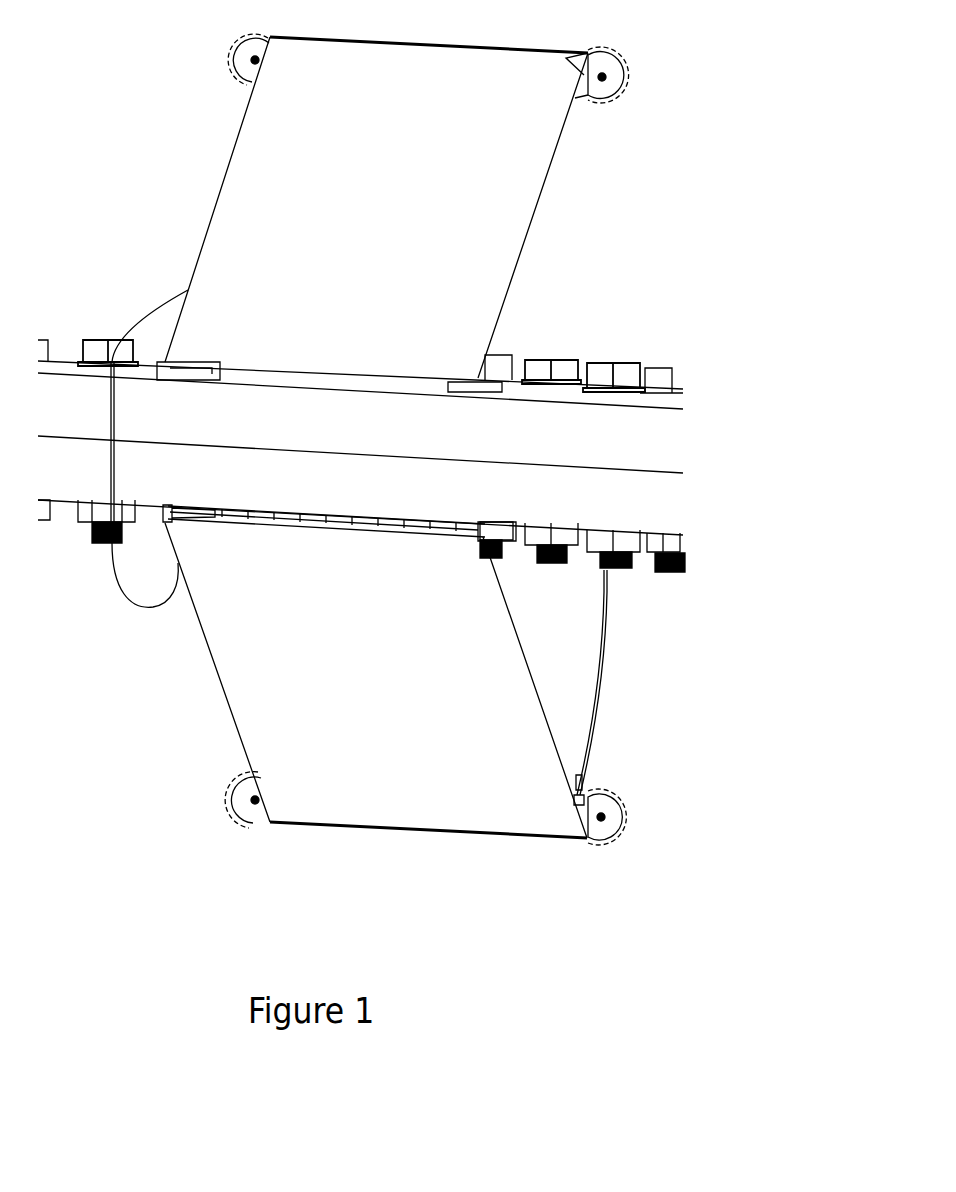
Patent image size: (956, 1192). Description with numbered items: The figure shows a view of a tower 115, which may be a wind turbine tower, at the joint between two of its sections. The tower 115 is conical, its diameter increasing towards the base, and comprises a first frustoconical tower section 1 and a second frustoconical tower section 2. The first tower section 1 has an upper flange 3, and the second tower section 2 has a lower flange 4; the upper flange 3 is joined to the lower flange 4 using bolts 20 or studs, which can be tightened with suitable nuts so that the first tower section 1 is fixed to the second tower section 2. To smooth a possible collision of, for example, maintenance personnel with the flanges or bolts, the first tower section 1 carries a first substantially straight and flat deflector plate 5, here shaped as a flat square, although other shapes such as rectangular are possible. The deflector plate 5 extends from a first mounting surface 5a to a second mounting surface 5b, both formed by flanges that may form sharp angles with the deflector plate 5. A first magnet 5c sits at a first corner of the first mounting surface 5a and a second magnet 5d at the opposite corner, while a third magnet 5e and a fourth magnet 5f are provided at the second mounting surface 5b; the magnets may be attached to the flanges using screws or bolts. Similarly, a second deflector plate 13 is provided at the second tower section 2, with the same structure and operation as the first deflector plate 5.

The first tower section 1 is at (673, 805).
The second tower section 2 is at (665, 87).
The upper flange 3 is at (653, 505).
The lower flange 4 is at (648, 438).
The first deflector plate 5 is at (322, 690).
The first mounting surface 5a is at (410, 837).
The second mounting surface 5b is at (340, 523).
The first magnet 5c is at (247, 825).
The second magnet 5d is at (620, 843).
The third magnet 5e is at (217, 520).
The fourth magnet 5f is at (503, 538).
The second deflector plate 13 is at (293, 183).
The bolts 20 is at (623, 362).
The tower 115 is at (733, 228).